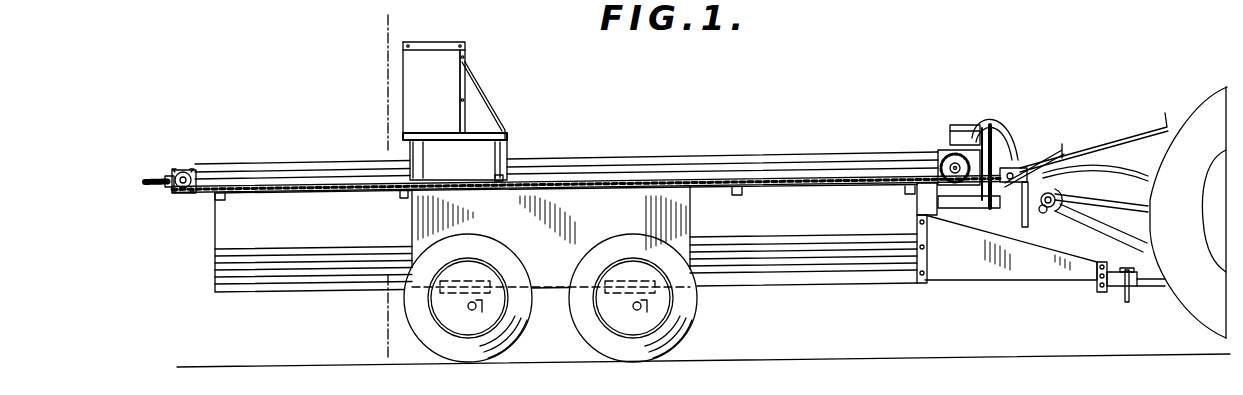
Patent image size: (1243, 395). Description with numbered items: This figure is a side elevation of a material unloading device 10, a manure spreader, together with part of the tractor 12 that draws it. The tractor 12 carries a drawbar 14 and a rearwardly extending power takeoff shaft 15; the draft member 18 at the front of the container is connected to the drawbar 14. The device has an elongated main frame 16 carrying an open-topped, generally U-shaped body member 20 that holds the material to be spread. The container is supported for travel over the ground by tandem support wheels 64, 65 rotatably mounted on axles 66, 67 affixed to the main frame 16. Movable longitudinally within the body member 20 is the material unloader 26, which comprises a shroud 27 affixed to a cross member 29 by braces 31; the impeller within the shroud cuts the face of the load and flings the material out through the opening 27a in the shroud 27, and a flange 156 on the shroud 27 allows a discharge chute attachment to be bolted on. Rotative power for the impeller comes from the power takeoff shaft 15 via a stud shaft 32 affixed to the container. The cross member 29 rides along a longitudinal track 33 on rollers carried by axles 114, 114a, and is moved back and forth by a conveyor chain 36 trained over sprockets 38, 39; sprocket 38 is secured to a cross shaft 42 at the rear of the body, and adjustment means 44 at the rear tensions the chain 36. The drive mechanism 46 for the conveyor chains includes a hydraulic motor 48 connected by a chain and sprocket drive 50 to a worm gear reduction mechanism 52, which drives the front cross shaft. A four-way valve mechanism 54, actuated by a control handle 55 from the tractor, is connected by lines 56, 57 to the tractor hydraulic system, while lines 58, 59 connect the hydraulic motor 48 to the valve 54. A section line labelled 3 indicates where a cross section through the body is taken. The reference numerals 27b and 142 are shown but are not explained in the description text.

The section line 3- 3 is at (405, 26).
The material unloading device 10 is at (692, 140).
The tractor 12 is at (1203, 95).
The drawbar 14 is at (1153, 292).
The power takeoff shaft 15 is at (1088, 218).
The main frame 16 is at (558, 296).
The draft member 18 is at (980, 269).
The body member 20 is at (240, 290).
The material unloader 26 is at (507, 114).
The shroud 27 is at (426, 70).
The opening 27a is at (416, 48).
The hopper side wall 27b is at (455, 92).
The cross member 29 is at (468, 172).
The braces 31 is at (486, 126).
The stud shaft 32 is at (998, 197).
The rail or track 33 is at (630, 160).
The chain 36 is at (207, 196).
The sprocket 38 is at (177, 192).
The sprocket 39 is at (948, 152).
The cross shaft 42 is at (187, 174).
The adjustment means 44 is at (160, 166).
The drive mechanism 46 is at (1003, 112).
The hydraulic motor 48 is at (962, 126).
The chain and sprocket drive 50 is at (993, 170).
The worm gear reduction mechanism 52 is at (965, 200).
The four-way valve mechanism 54 is at (1013, 178).
The control handle 55 is at (1113, 138).
The line 56 is at (1093, 190).
The line 57 is at (1117, 171).
The line 58 is at (996, 148).
The line 59 is at (995, 130).
The support wheel 64 is at (468, 313).
The support wheel 65 is at (633, 310).
The axle 66 is at (461, 305).
The axle 67 is at (624, 305).
The axle 114 is at (402, 197).
The axle 114a is at (505, 173).
The universal coupling 142 is at (1036, 206).
The flange 156 is at (464, 46).